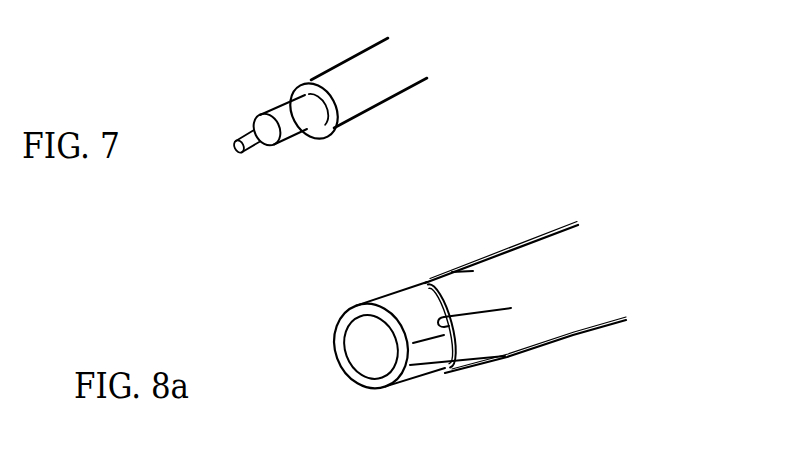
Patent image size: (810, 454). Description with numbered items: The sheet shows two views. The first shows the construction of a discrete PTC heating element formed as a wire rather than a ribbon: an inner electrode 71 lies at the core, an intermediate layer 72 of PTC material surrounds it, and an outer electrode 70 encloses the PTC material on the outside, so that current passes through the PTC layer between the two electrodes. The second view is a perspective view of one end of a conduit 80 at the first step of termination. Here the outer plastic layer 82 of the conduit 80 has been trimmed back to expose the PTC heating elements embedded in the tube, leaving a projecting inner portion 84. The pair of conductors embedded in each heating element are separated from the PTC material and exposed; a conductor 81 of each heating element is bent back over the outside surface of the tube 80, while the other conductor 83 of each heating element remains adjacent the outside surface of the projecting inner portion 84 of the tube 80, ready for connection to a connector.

In FIG. 7, the outer electrode 70 is at (363, 113).
In FIG. 7, the inner electrode 71 is at (257, 153).
In FIG. 7, the intermediate layer of PTC material 72 is at (275, 108).
In FIG. 8A, the conduit 80 is at (556, 302).
In FIG. 8A, the conductor 81 is at (499, 356).
In FIG. 8A, the outer plastic layer 82 is at (526, 323).
In FIG. 8A, the other conductor 83 is at (427, 372).
In FIG. 8A, the projecting inner portion 84 is at (395, 306).